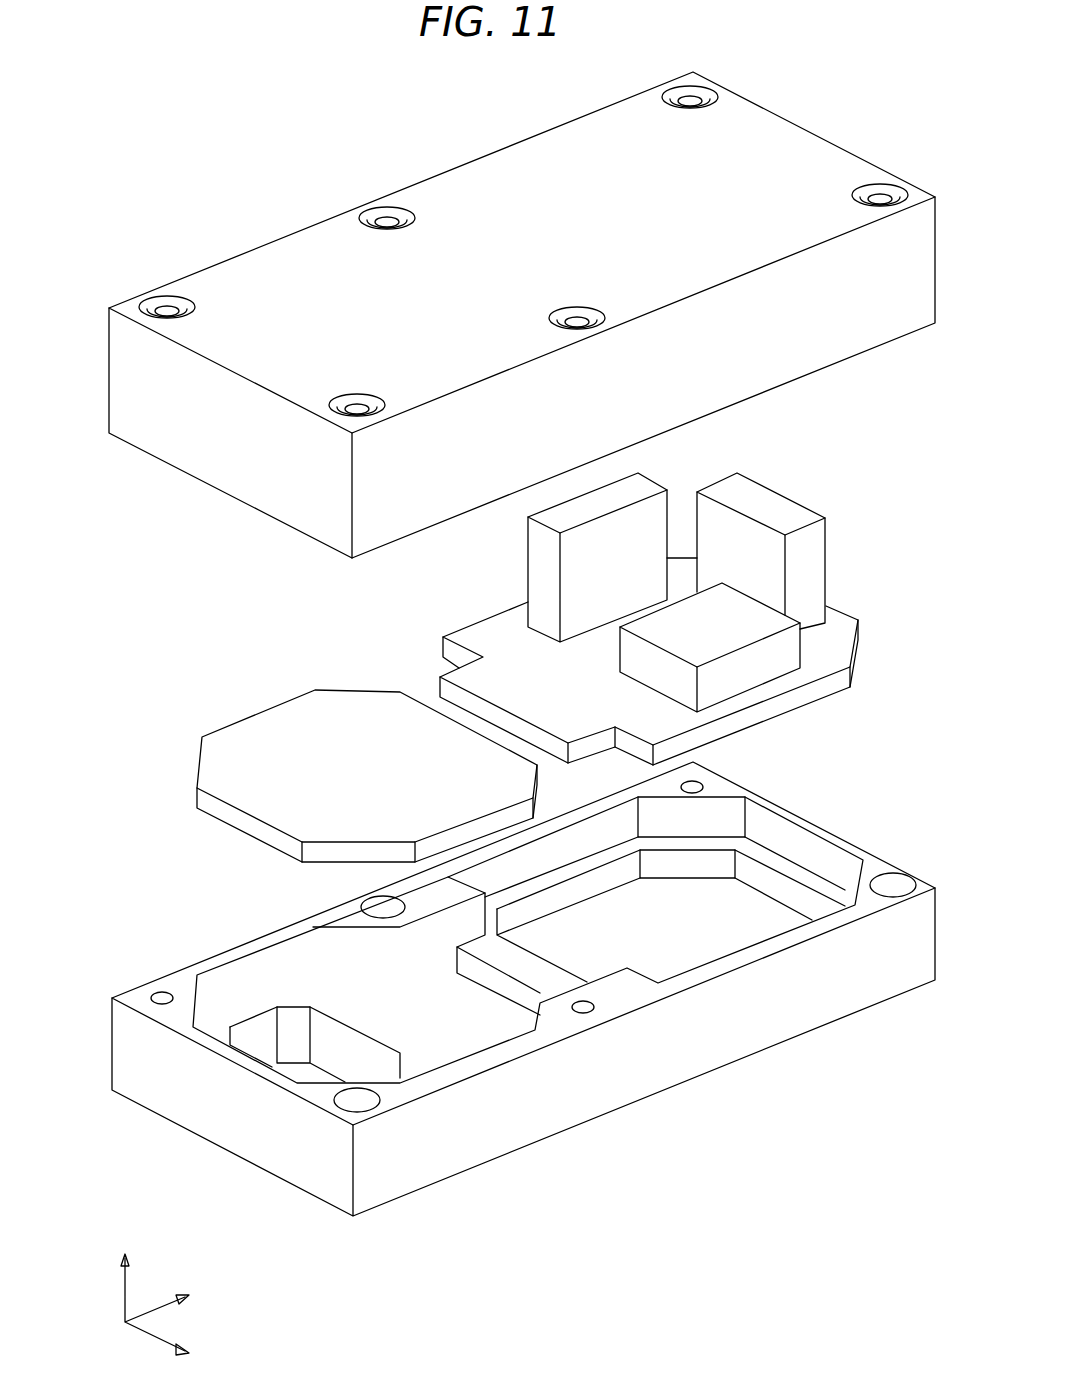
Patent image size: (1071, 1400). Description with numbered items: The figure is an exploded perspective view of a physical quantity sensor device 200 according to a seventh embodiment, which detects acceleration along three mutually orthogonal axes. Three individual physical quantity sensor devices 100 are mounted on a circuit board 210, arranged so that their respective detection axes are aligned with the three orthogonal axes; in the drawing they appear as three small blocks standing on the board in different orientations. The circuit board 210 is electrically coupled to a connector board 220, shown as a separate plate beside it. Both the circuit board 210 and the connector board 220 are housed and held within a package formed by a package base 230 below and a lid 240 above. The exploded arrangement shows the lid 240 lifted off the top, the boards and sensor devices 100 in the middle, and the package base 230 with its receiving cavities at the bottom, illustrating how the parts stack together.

The physical quantity sensor device 100 is at (538, 563).
The physical quantity sensor device 200 is at (163, 620).
The circuit board 210 is at (842, 623).
The connector board 220 is at (263, 730).
The package base 230 is at (637, 1066).
The lid 240 is at (470, 182).